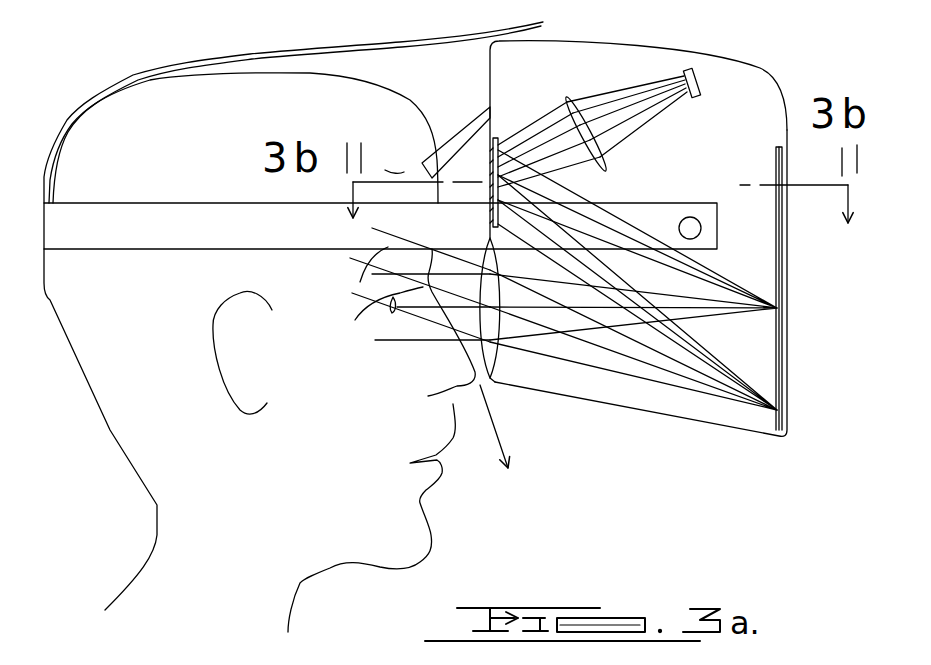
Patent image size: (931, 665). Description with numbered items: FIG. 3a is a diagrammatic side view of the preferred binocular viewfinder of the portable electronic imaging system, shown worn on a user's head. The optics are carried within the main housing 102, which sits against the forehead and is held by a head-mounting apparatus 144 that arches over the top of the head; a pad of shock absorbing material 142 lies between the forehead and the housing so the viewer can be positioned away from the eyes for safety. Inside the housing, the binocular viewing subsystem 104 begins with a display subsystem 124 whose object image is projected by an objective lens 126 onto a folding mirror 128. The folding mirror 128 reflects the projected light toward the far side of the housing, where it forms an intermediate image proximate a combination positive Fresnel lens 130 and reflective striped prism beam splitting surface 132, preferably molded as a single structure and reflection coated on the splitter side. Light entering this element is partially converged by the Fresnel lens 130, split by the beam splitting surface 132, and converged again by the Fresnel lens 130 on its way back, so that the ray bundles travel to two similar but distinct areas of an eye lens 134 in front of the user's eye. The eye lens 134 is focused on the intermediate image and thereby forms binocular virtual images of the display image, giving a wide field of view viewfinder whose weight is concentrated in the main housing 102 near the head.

The main housing 102 is at (483, 106).
The binocular viewing subsystem 104 is at (752, 487).
The display subsystem 124 is at (704, 80).
The objective lens 126 is at (578, 100).
The folding mirror 128 is at (496, 140).
The positive Fresnel lens 130 is at (772, 158).
The reflective striped prism beam splitting surface 132 is at (792, 338).
The eye lens 134 is at (497, 360).
The shock absorbing material 142 is at (422, 170).
The head-mounting apparatus 144 is at (194, 58).